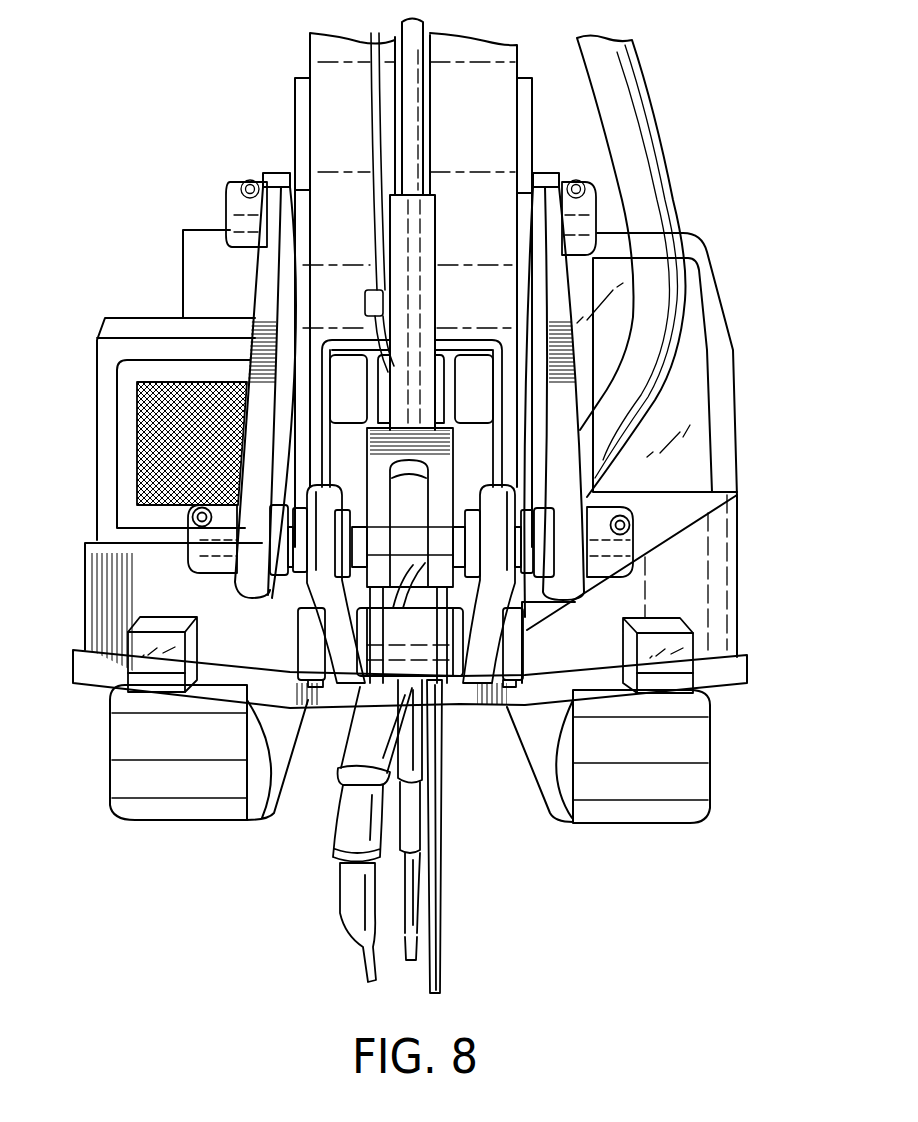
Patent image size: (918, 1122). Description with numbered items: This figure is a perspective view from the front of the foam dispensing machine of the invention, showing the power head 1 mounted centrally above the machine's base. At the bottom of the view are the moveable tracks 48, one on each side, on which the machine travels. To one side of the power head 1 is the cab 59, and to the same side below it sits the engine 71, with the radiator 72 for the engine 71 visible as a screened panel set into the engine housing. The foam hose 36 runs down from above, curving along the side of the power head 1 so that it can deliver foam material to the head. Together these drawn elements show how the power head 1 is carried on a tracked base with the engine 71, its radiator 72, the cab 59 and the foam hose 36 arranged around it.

The power head 1 is at (505, 870).
The foam hose 36 is at (657, 170).
The tracks 48 is at (124, 787).
The cab 59 is at (203, 242).
The engine 71 is at (93, 443).
The radiator 72 is at (153, 407).